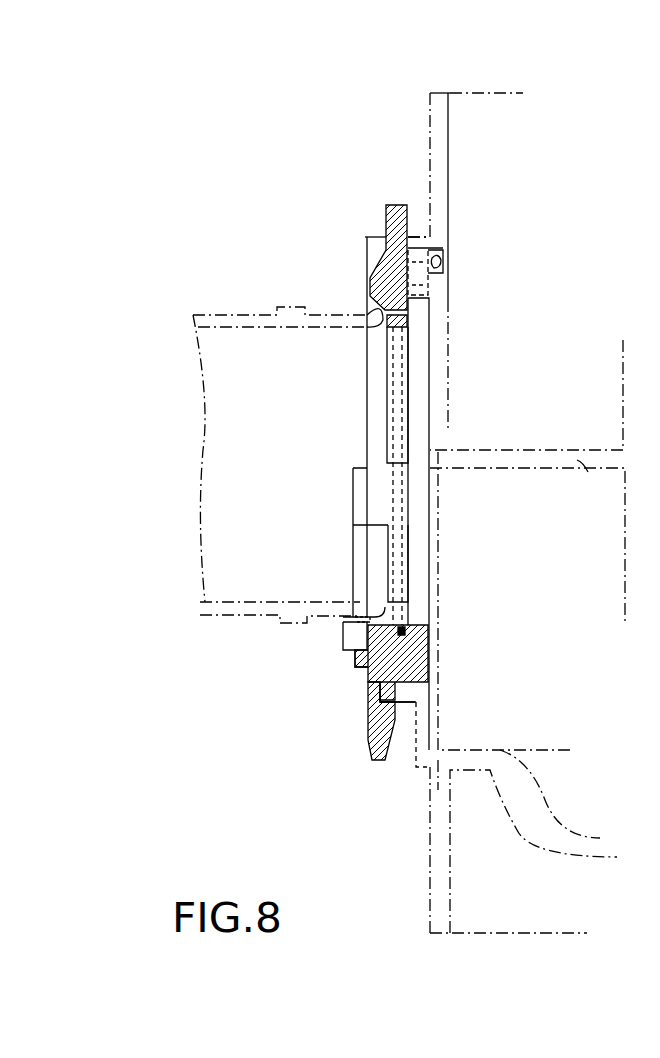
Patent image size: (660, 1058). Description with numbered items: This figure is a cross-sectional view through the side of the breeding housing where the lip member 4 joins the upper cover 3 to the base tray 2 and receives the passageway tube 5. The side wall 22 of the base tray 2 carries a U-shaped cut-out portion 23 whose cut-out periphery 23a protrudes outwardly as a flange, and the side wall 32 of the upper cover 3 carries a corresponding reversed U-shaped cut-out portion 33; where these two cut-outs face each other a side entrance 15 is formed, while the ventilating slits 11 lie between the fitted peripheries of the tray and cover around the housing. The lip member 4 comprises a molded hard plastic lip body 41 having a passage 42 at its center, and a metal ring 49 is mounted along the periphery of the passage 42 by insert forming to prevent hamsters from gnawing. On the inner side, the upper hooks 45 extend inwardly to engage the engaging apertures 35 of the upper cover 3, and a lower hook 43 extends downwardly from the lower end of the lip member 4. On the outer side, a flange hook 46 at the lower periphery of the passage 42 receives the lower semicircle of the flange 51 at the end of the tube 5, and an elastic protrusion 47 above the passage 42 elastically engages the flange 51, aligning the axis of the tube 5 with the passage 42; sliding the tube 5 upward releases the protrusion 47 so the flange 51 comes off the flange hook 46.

The base tray 2 is at (600, 810).
The upper cover 3 is at (527, 172).
The lip member 4 is at (292, 265).
The lip body 41 is at (296, 198).
The passageway tube 5 is at (247, 617).
The ventilating slits 11 is at (587, 470).
The side entrances 15 is at (489, 615).
The side walls 22 is at (438, 823).
The U-shaped cut-out portion 23 is at (448, 530).
The cut-out periphery 23a is at (420, 697).
The side walls 32 is at (430, 147).
The reversed U-shaped cut-out portion 33 is at (435, 347).
The engaging apertures 35 is at (420, 267).
The passage 42 is at (375, 427).
The lower hook 43 is at (370, 740).
The upper hooks 45 is at (437, 262).
The flange hook 46 is at (360, 617).
The elastic protrusion 47 is at (368, 277).
The metal ring 49 is at (407, 628).
The flange 51 is at (380, 320).